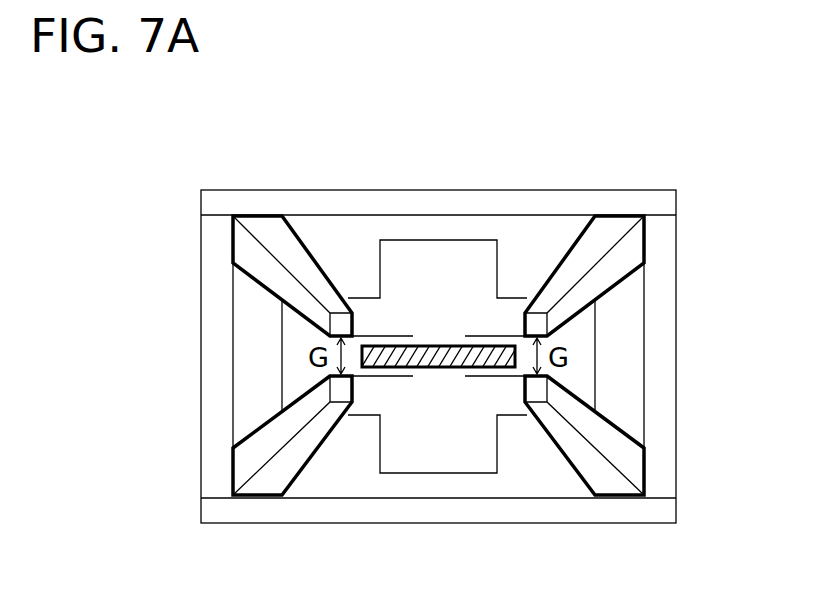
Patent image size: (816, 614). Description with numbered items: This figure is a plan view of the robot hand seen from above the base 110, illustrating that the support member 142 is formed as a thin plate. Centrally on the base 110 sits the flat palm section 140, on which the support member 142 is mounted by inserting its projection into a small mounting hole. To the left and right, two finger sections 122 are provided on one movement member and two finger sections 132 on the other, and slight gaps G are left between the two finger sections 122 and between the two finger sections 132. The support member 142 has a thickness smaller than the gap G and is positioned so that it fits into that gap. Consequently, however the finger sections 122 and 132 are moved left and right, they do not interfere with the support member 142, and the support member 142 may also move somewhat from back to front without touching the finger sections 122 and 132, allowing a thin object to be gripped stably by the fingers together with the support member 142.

The base 110 is at (327, 190).
The finger sections 122 is at (257, 423).
The finger sections 132 is at (617, 287).
The palm section 140 is at (438, 473).
The support member 142 is at (437, 346).